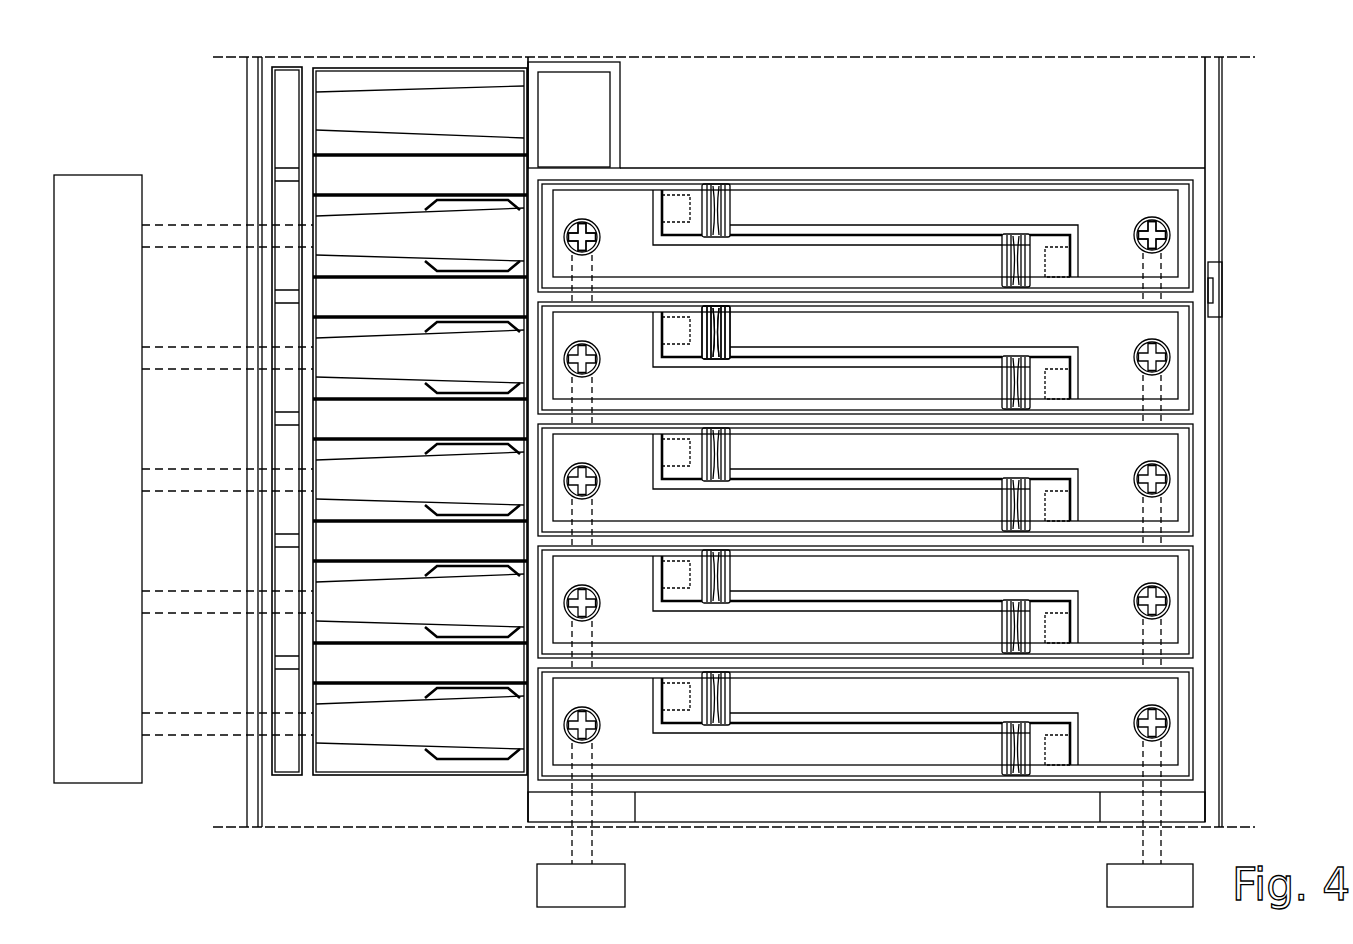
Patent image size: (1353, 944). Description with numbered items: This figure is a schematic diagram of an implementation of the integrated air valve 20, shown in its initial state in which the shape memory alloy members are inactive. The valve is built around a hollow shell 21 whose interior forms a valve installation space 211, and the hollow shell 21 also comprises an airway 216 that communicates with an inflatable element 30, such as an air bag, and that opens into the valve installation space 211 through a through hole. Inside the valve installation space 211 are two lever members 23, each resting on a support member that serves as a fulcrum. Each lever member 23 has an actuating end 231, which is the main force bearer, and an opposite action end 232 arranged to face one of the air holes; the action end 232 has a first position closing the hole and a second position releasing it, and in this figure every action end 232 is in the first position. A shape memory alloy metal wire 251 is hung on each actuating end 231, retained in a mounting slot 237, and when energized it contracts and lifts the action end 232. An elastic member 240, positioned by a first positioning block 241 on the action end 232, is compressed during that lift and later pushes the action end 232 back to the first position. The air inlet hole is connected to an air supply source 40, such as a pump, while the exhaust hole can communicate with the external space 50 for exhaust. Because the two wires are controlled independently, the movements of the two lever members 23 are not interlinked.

The integrated air valve 20 is at (300, 98).
The hollow shell 21 is at (875, 168).
The valve installation space 211 is at (689, 189).
The airway 216 is at (318, 215).
The lever member 23 is at (805, 245).
The actuating end 231 is at (1036, 245).
The action end 232 is at (557, 250).
The mounting slot 237 is at (716, 332).
The elastic member 240 is at (589, 225).
The first positioning block 241 is at (585, 235).
The metal wire 251 is at (1012, 236).
The inflatable element 30 is at (95, 783).
The air supply source 40 is at (537, 880).
The external space 50 is at (1107, 880).